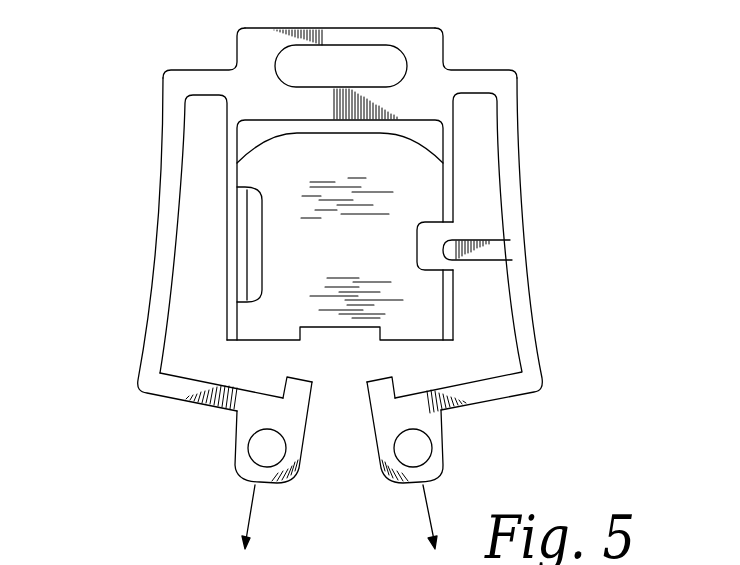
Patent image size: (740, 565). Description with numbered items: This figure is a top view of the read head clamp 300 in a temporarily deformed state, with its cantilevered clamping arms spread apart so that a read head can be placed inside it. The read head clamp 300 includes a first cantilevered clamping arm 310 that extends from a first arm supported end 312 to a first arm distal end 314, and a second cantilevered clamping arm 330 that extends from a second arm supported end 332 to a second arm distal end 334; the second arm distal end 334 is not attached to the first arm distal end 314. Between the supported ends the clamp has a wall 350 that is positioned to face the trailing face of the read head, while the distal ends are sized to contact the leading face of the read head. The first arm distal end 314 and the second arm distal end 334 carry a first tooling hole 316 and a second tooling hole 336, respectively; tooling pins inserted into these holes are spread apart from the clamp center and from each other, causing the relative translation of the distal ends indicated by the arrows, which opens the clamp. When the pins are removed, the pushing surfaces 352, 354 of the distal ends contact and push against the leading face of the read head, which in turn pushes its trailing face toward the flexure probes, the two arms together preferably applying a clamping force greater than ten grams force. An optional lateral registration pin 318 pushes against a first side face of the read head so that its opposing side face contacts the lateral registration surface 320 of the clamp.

The read head clamp 300 is at (136, 161).
The first cantilevered clamping arm 310 is at (536, 317).
The first arm supported end 312 is at (478, 77).
The first arm distal end 314 is at (420, 408).
The first tooling hole 316 is at (423, 448).
The lateral registration pin 318 is at (470, 243).
The lateral registration surface 320 is at (250, 253).
The second cantilevered clamping arm 330 is at (153, 273).
The second arm supported end 332 is at (202, 77).
The second arm distal end 334 is at (283, 413).
The second tooling hole 336 is at (257, 448).
The wall 350 is at (350, 122).
The pushing surface 352 is at (372, 380).
The pushing surface 354 is at (290, 377).